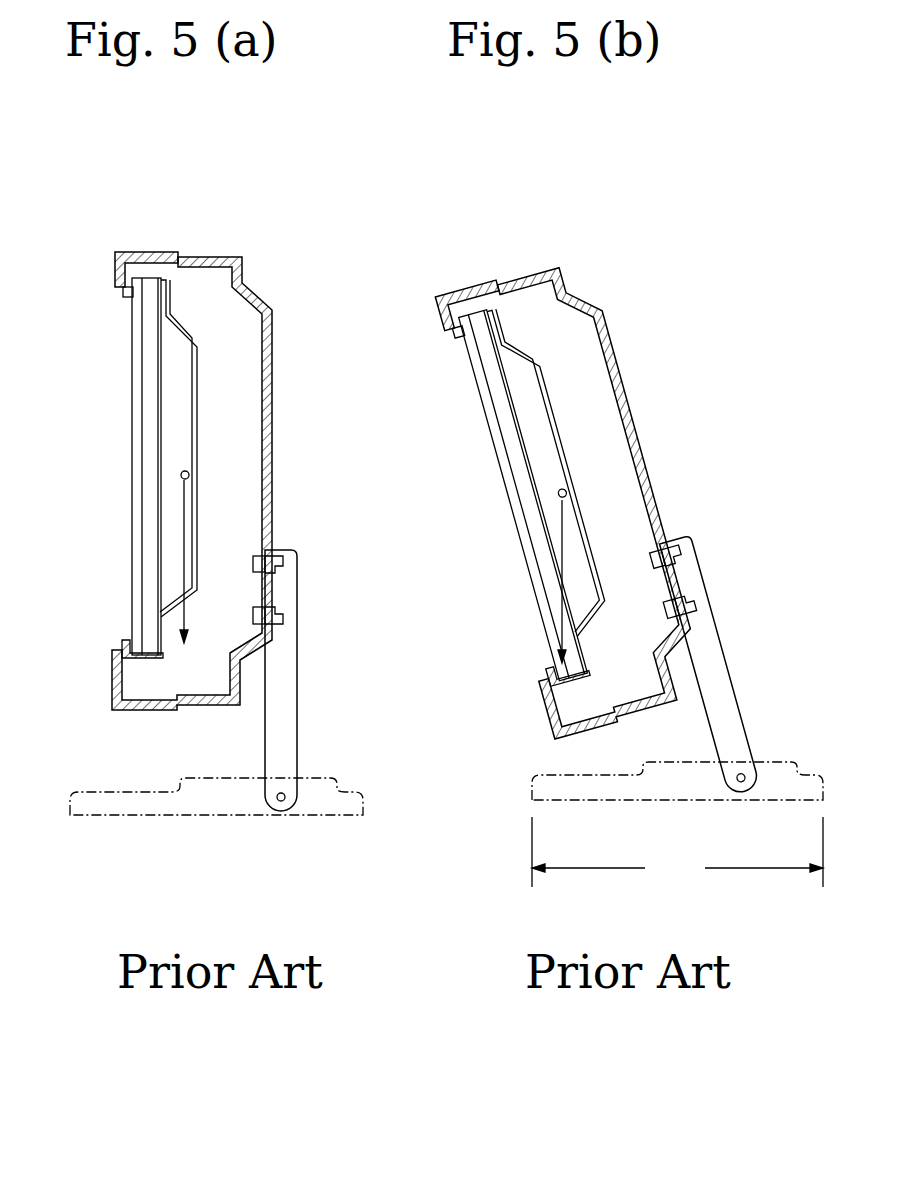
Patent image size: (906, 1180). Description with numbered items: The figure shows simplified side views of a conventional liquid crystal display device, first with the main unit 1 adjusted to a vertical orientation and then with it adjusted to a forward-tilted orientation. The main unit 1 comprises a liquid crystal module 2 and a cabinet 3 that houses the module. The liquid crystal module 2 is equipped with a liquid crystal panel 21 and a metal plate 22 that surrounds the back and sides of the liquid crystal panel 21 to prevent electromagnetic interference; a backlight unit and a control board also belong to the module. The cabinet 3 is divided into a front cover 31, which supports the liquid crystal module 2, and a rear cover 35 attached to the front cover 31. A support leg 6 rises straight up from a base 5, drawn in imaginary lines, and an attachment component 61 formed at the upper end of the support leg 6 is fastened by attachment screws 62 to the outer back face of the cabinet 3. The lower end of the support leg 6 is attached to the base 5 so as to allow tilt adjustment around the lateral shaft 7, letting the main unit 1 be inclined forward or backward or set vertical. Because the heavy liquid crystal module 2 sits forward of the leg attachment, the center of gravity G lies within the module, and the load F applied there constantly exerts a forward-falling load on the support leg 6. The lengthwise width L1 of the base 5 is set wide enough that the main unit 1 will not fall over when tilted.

In FIG. 5A, the main unit 1 is at (203, 419).
In FIG. 5B, the main unit 1 is at (563, 438).
In FIG. 5A, the liquid crystal module 2 is at (203, 466).
In FIG. 5B, the liquid crystal module 2 is at (559, 491).
In FIG. 5A, the cabinet 3 is at (192, 419).
In FIG. 5B, the cabinet 3 is at (571, 438).
In FIG. 5A, the front cover 31 is at (152, 252).
In FIG. 5B, the front cover 31 is at (475, 283).
In FIG. 5A, the rear cover 35 is at (127, 172).
In FIG. 5B, the rear cover 35 is at (447, 182).
In FIG. 5A, the liquid crystal panel 21 is at (140, 386).
In FIG. 5B, the liquid crystal panel 21 is at (492, 418).
In FIG. 5A, the metal plate 22 is at (194, 406).
In FIG. 5B, the metal plate 22 is at (555, 425).
In FIG. 5A, the base 5 is at (88, 790).
In FIG. 5B, the base 5 is at (520, 762).
In FIG. 5A, the support leg 6 is at (316, 705).
In FIG. 5B, the support leg 6 is at (724, 677).
In FIG. 5A, the attachment component 61 is at (287, 553).
In FIG. 5B, the attachment component 61 is at (682, 541).
In FIG. 5A, the attachment screw 62 is at (283, 568).
In FIG. 5B, the attachment screw 62 is at (682, 556).
In FIG. 5A, the lateral shaft 7 is at (279, 801).
In FIG. 5B, the lateral shaft 7 is at (739, 783).
In FIG. 5A, the center of gravity G is at (181, 475).
In FIG. 5B, the center of gravity G is at (558, 494).
In FIG. 5A, the load F is at (185, 576).
In FIG. 5B, the load F is at (560, 618).
In FIG. 5B, the lengthwise width L1 is at (677, 852).